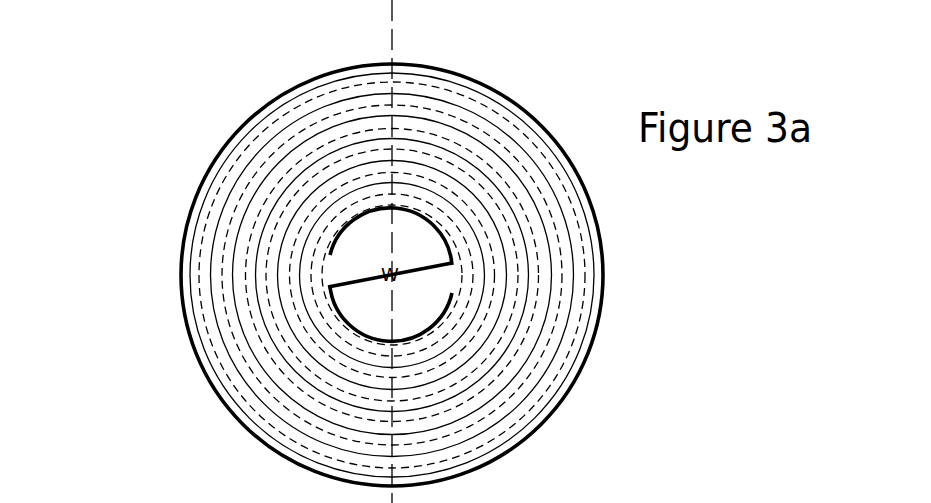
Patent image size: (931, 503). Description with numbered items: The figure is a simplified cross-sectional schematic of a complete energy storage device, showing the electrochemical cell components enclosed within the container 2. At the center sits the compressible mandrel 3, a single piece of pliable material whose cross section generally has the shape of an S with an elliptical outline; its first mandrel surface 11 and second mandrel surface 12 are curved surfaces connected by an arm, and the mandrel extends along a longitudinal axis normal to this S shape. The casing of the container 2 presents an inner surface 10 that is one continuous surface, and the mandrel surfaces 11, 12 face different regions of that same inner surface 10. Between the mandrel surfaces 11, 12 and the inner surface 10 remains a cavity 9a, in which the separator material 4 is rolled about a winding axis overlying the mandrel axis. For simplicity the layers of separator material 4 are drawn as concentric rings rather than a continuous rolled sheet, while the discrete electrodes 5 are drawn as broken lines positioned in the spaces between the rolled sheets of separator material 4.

The container 2 is at (195, 197).
The compressible mandrel 3 is at (450, 266).
The separator material 4 is at (518, 405).
The discrete electrodes 5 is at (217, 360).
The cavity 9a is at (457, 243).
The inner surface 10 is at (425, 68).
The first mandrel surface 11 is at (345, 222).
The second mandrel surface 12 is at (413, 338).